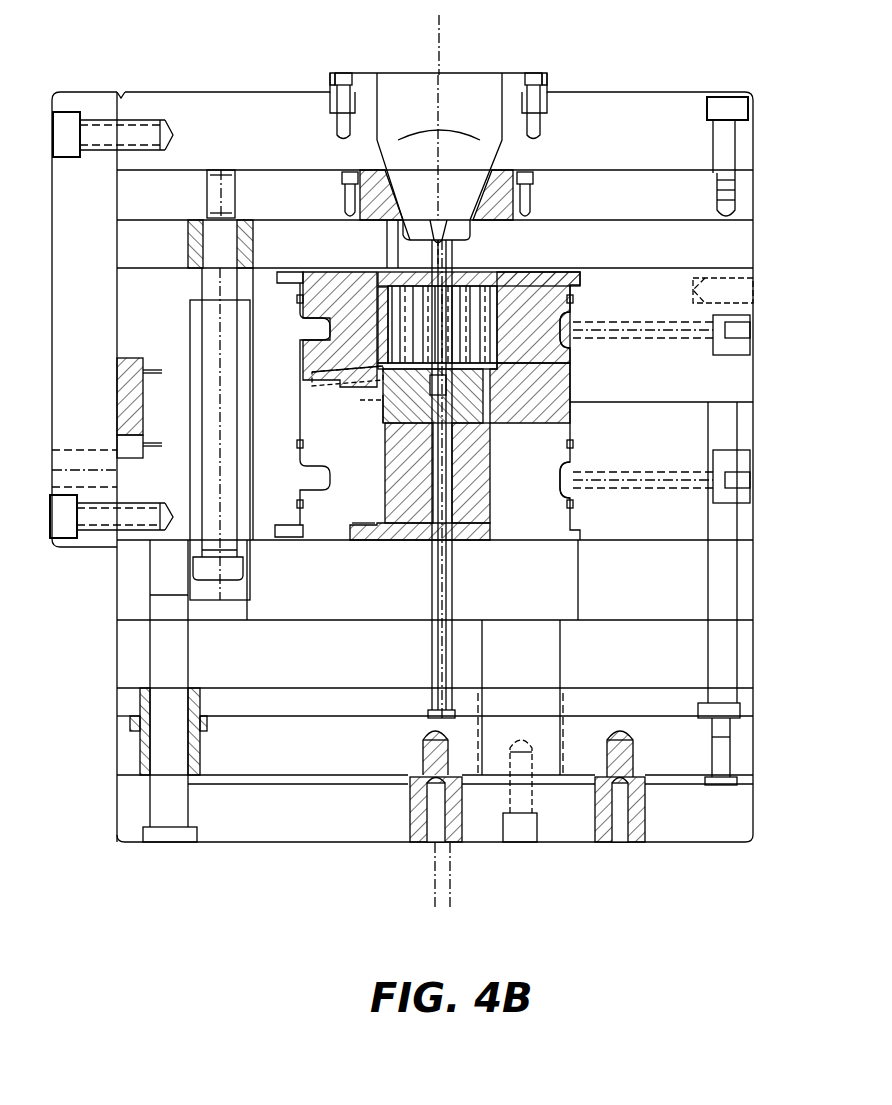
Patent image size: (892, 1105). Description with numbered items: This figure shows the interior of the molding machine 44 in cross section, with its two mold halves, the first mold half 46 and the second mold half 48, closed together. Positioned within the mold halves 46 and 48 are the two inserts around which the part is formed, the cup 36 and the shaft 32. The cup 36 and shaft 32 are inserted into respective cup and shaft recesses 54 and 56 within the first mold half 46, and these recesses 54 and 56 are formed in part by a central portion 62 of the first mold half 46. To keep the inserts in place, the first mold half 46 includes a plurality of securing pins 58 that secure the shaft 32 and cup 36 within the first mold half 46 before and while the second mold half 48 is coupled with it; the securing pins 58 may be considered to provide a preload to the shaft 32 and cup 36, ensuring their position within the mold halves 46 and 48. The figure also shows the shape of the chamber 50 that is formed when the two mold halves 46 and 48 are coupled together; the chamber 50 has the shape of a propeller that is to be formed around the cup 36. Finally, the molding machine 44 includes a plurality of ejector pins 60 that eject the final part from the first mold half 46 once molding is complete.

The molding machine 44 is at (401, 462).
The second mold half 48 is at (765, 93).
The first mold half 46 is at (765, 405).
The securing pins 58 is at (467, 275).
The chamber 50 is at (350, 372).
The cup recess 54 is at (373, 400).
The cup 36 is at (378, 420).
The shaft recess 56 is at (485, 393).
The shaft 32 is at (490, 440).
The central portion 62 is at (410, 540).
The ejector pins 60 is at (445, 662).